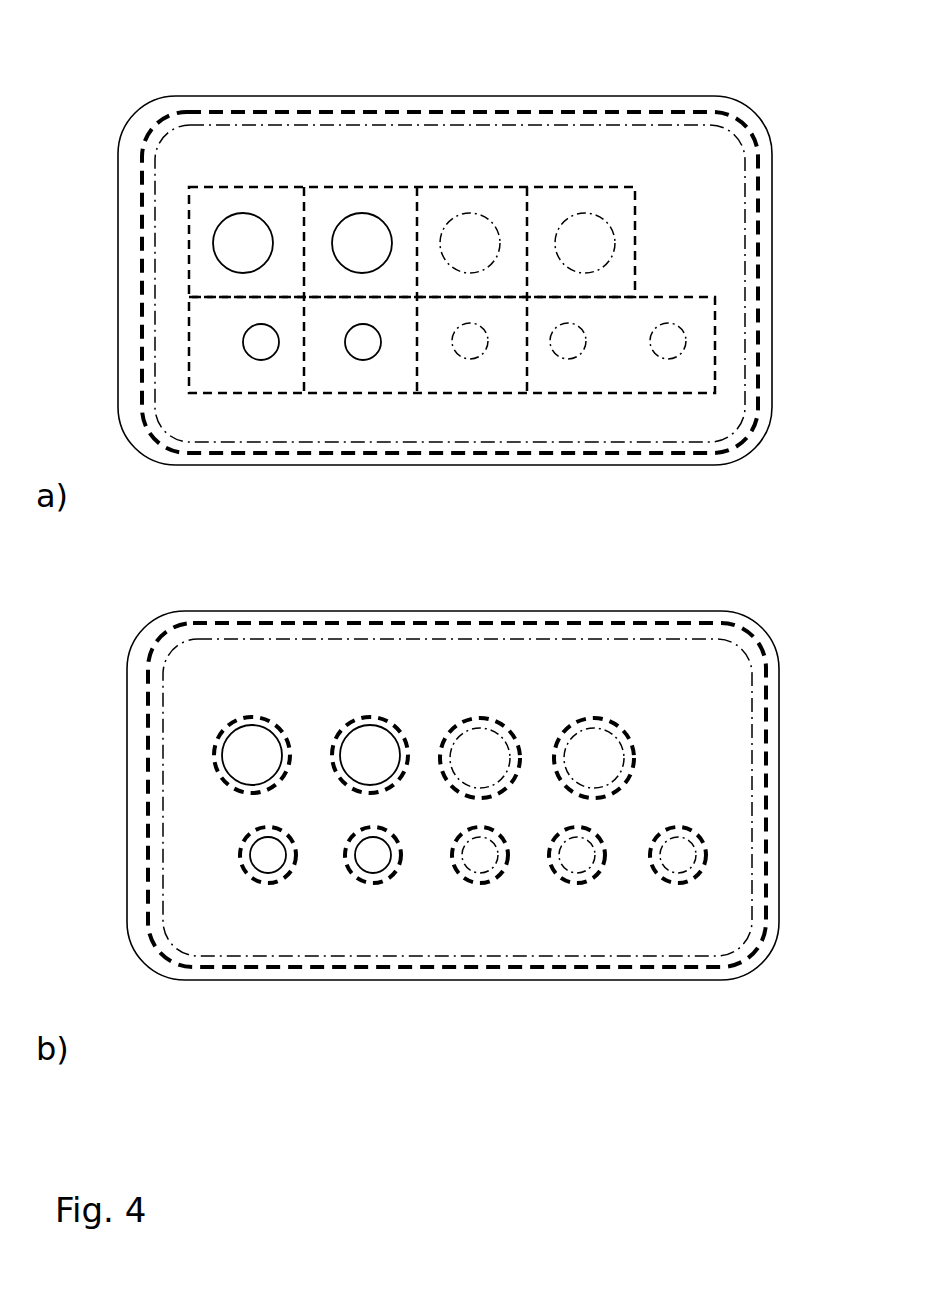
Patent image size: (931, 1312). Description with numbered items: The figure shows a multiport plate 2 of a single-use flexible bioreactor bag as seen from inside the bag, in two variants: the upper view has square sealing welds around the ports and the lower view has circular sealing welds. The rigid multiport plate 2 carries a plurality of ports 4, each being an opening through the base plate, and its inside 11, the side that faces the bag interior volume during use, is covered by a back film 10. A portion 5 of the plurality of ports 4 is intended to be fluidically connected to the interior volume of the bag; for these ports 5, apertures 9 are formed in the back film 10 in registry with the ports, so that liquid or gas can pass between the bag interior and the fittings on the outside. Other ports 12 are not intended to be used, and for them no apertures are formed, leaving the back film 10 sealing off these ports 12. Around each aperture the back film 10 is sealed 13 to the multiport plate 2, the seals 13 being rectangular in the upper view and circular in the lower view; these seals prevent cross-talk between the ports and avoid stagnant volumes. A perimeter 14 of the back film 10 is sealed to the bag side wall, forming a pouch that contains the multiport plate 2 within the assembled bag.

The multiport plate 2 is at (713, 128).
The ports 4 is at (365, 546).
The portion of the plurality of ports 5 is at (368, 340).
The apertures 9 is at (358, 332).
The back film 10 is at (210, 97).
The inside 11 is at (555, 155).
The ports not intended to be used 12 is at (460, 240).
The seals 13 is at (307, 350).
The perimeter of the back film 14 is at (758, 203).